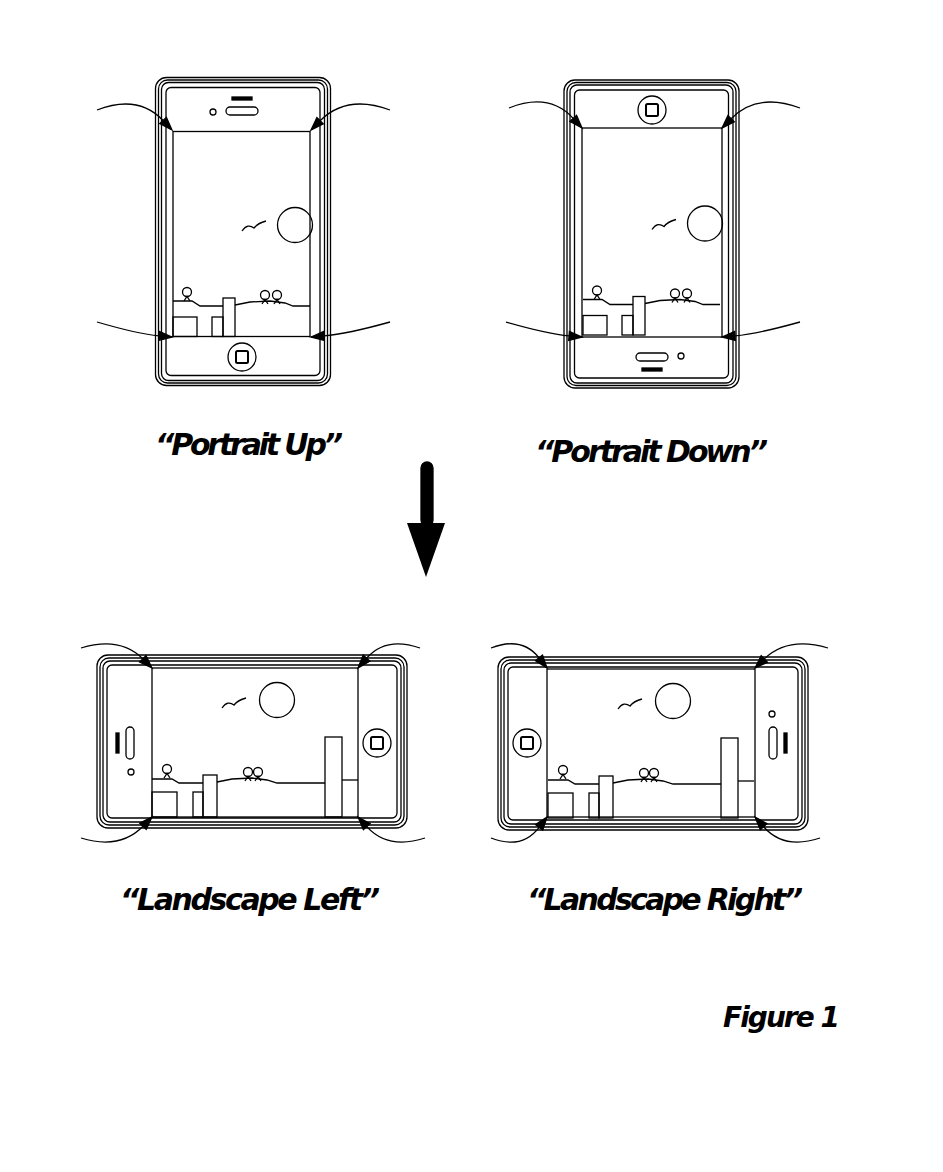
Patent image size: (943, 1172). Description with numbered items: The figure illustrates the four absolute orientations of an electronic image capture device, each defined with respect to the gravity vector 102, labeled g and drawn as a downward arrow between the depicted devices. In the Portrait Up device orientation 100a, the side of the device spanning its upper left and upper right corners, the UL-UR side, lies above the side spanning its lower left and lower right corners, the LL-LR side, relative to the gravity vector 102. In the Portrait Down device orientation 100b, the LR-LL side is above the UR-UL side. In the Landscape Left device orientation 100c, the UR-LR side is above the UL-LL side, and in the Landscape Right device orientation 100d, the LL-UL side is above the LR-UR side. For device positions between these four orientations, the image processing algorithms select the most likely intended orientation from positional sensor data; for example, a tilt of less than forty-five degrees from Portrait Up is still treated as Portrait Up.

The Portrait Up device orientation 100a is at (177, 39).
The Portrait Down device orientation 100b is at (585, 42).
The Landscape Left device orientation 100c is at (159, 619).
The Landscape Right device orientation 100d is at (560, 620).
The gravity vector 102 is at (433, 438).